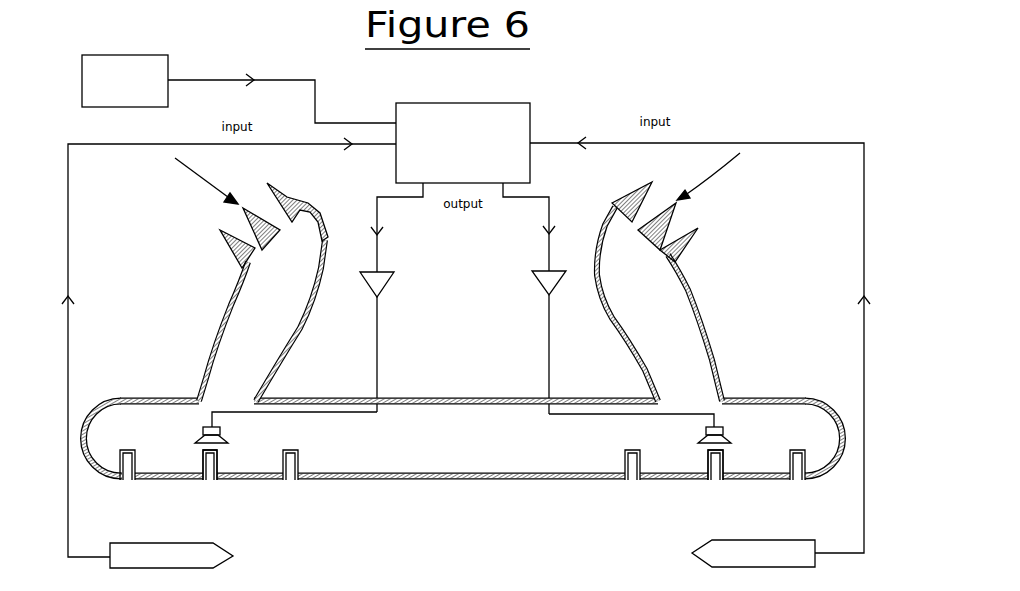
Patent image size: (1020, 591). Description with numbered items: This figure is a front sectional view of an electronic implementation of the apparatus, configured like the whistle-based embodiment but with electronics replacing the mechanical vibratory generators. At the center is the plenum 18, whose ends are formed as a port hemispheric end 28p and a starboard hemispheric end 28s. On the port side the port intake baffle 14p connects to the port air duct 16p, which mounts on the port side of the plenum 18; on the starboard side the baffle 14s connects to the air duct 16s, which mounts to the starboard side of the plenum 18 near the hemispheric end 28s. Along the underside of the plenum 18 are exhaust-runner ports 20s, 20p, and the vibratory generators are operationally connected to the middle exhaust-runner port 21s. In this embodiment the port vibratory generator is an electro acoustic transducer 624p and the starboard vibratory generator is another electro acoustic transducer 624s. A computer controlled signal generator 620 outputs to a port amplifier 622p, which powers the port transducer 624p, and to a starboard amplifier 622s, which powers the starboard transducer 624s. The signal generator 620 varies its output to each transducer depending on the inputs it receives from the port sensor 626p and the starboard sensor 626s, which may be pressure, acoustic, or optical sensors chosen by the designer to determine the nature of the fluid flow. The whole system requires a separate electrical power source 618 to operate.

The electrical power source 618 is at (239, 81).
The computer controlled signal generator 620 is at (531, 104).
The starboard amplifier 622s is at (392, 274).
The port amplifier 622p is at (527, 273).
The starboard electro acoustic transducer 624s is at (198, 425).
The port electro acoustic transducer 624p is at (727, 417).
The starboard sensor 626s is at (110, 543).
The port sensor 626p is at (828, 528).
The starboard intake baffle 14s is at (268, 183).
The port intake baffle 14p is at (648, 180).
The starboard air duct 16s is at (228, 298).
The port air duct 16p is at (688, 285).
The plenum 18 is at (449, 394).
The starboard ports 20s is at (127, 483).
The port side ports 20p is at (800, 480).
The middle exhaust-runner port 21s is at (212, 481).
The starboard hemispheric end 28s is at (98, 402).
The port hemispheric end 28p is at (820, 398).